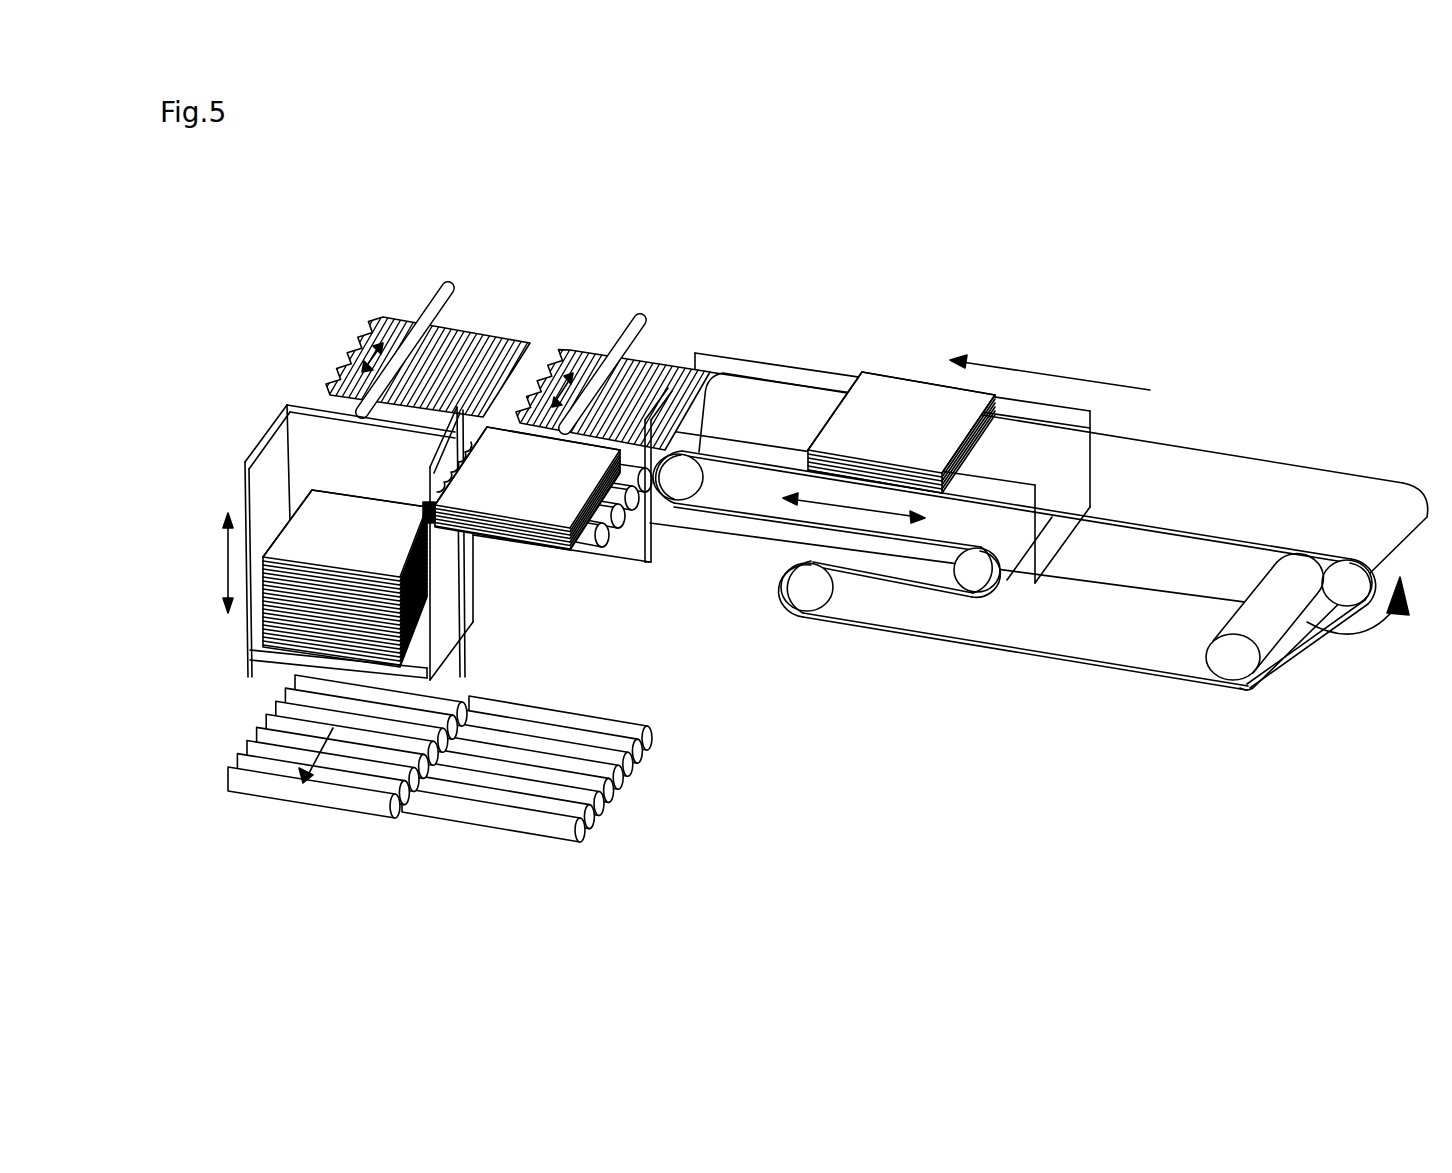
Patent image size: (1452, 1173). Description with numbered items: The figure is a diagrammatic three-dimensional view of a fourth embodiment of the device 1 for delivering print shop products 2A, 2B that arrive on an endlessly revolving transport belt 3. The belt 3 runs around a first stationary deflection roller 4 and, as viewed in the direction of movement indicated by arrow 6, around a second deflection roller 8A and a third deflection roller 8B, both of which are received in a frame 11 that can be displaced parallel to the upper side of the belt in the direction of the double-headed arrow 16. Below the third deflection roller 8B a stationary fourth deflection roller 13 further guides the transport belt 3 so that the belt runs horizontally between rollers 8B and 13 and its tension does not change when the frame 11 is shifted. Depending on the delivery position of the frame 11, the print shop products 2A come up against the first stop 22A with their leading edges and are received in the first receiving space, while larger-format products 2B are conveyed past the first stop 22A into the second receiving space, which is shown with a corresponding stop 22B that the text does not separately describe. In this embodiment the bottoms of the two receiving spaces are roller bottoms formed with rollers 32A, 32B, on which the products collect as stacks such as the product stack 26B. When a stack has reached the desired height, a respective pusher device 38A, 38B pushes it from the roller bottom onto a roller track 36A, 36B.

The device 1 is at (300, 296).
The print shop products 2A is at (571, 599).
The print shop products 2B is at (355, 477).
The transport belt 3 is at (1040, 475).
The first stationary deflection roller 4 is at (1337, 573).
The arrow 6 is at (1045, 370).
The second deflection roller 8A is at (690, 480).
The third deflection roller 8B is at (977, 583).
The frame 11 is at (750, 480).
The fourth deflection roller 13 is at (800, 600).
The double-headed arrow 16 is at (853, 507).
The first stop 22A is at (500, 458).
The side plate of second unit 22B is at (345, 522).
The product stack 26B is at (283, 532).
The roller 32A is at (583, 545).
The roller 32B is at (258, 648).
The roller track 36A is at (525, 828).
The roller track 36B is at (325, 795).
The pusher device 38A is at (653, 537).
The pusher device 38B is at (337, 432).